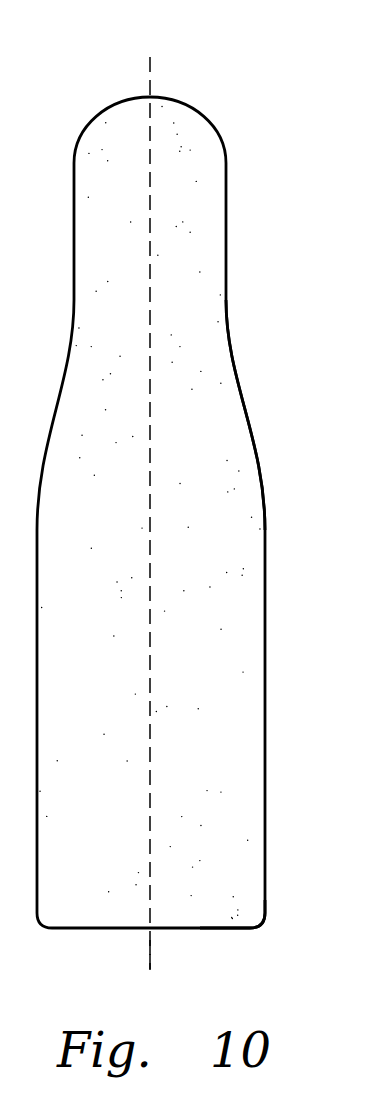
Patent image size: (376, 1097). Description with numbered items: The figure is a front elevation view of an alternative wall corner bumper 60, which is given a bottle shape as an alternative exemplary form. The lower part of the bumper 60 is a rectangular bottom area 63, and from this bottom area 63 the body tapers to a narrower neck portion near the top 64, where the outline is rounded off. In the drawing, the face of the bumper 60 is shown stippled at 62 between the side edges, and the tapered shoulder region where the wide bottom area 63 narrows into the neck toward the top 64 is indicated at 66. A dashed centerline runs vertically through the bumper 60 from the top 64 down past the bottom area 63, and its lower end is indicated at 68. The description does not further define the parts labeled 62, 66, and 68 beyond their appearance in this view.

The wall corner bumper 60 is at (297, 152).
The tamper body 62 is at (194, 267).
The rectangular bottom area 63 is at (226, 929).
The top 64 is at (156, 97).
The tapered shoulder 66 is at (263, 491).
The axis end 68 is at (148, 957).